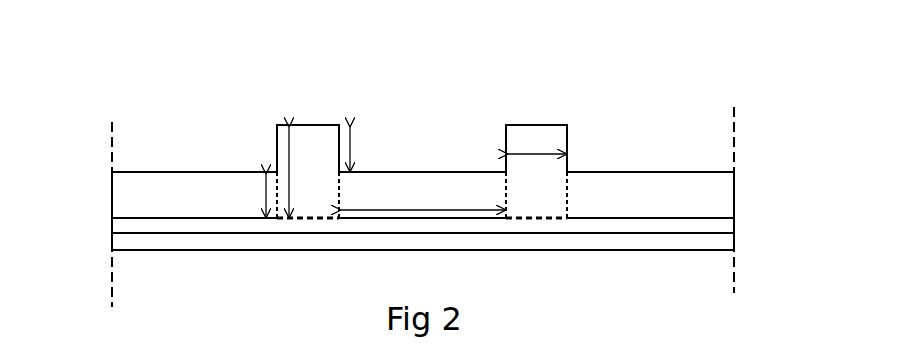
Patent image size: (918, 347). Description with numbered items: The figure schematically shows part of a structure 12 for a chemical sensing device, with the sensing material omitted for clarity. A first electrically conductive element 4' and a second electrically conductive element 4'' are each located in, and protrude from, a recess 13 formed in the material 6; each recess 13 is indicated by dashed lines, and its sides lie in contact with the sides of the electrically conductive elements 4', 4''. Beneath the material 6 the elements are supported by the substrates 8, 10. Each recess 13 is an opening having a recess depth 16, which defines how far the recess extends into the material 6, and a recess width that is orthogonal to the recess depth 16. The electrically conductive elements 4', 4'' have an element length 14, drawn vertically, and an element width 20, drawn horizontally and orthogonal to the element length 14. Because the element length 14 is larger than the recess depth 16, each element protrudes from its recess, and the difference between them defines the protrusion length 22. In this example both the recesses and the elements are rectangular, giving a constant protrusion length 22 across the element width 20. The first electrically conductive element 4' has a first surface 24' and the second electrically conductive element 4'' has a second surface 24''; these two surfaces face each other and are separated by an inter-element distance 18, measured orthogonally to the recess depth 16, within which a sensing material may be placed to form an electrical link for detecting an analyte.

The first electrically conductive element 4' is at (308, 131).
The second electrically conductive element 4'' is at (536, 118).
The material 6 is at (160, 195).
The substrate 8 is at (160, 226).
The substrate 10 is at (160, 242).
The structure 12 is at (647, 264).
The recess 13 is at (293, 218).
The element length 14 is at (288, 160).
The recess depth 16 is at (265, 193).
The inter-element distance 18 is at (455, 210).
The element width 20 is at (545, 154).
The protrusion length 22 is at (351, 128).
The first surface 24' is at (298, 241).
The second surface 24'' is at (554, 245).